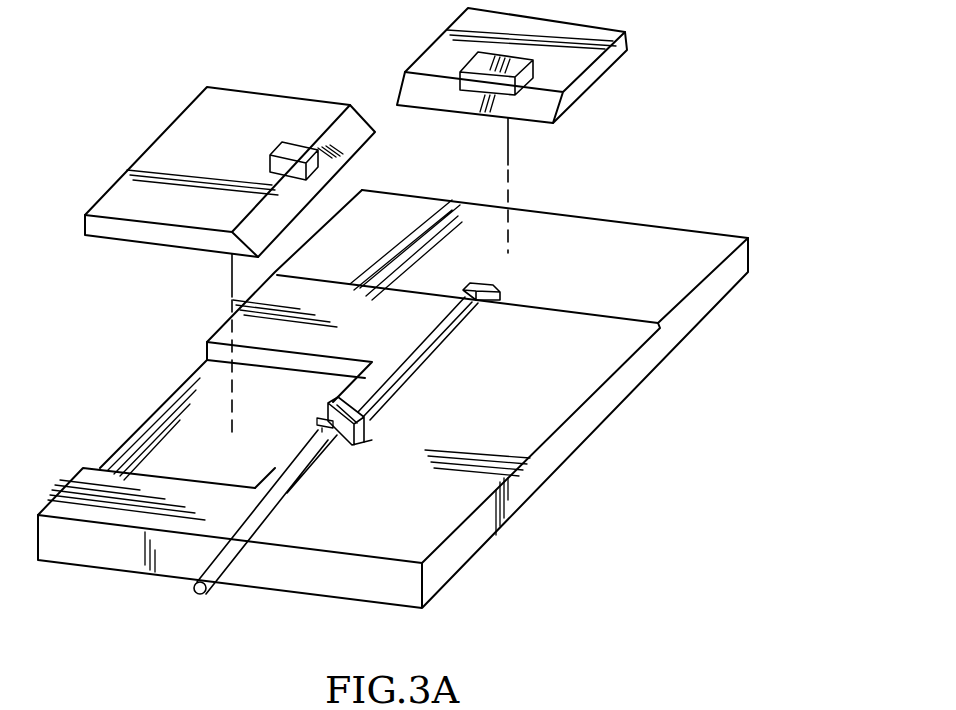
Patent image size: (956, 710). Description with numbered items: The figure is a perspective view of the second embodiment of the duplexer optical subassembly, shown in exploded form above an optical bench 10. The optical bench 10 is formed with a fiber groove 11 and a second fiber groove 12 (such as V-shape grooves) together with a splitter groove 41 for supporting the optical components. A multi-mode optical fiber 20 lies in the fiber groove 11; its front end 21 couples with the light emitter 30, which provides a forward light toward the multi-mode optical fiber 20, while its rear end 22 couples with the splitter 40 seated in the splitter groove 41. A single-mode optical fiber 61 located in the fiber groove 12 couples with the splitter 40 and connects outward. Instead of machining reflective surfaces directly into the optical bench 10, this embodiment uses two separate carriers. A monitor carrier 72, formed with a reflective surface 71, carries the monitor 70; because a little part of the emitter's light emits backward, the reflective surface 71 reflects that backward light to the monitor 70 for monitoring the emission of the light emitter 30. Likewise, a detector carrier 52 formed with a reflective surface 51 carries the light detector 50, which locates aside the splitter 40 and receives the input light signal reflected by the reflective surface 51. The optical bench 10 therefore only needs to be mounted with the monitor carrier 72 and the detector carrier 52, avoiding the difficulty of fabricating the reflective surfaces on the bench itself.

The optical bench 10 is at (573, 440).
The fiber groove 11 is at (420, 373).
The fiber groove 12 is at (240, 549).
The multi-mode optical fiber 20 is at (413, 348).
The front end 21 is at (482, 306).
The rear end 22 is at (372, 417).
The light emitter 30 is at (478, 284).
The splitter 40 is at (328, 404).
The splitter groove 41 is at (367, 440).
The light detector 50 is at (295, 143).
The reflective surface 51 is at (340, 150).
The detector carrier 52 is at (188, 213).
The single-mode optical fiber 61 is at (290, 497).
The monitor 70 is at (480, 63).
The reflective surface 71 is at (463, 102).
The monitor carrier 72 is at (587, 81).